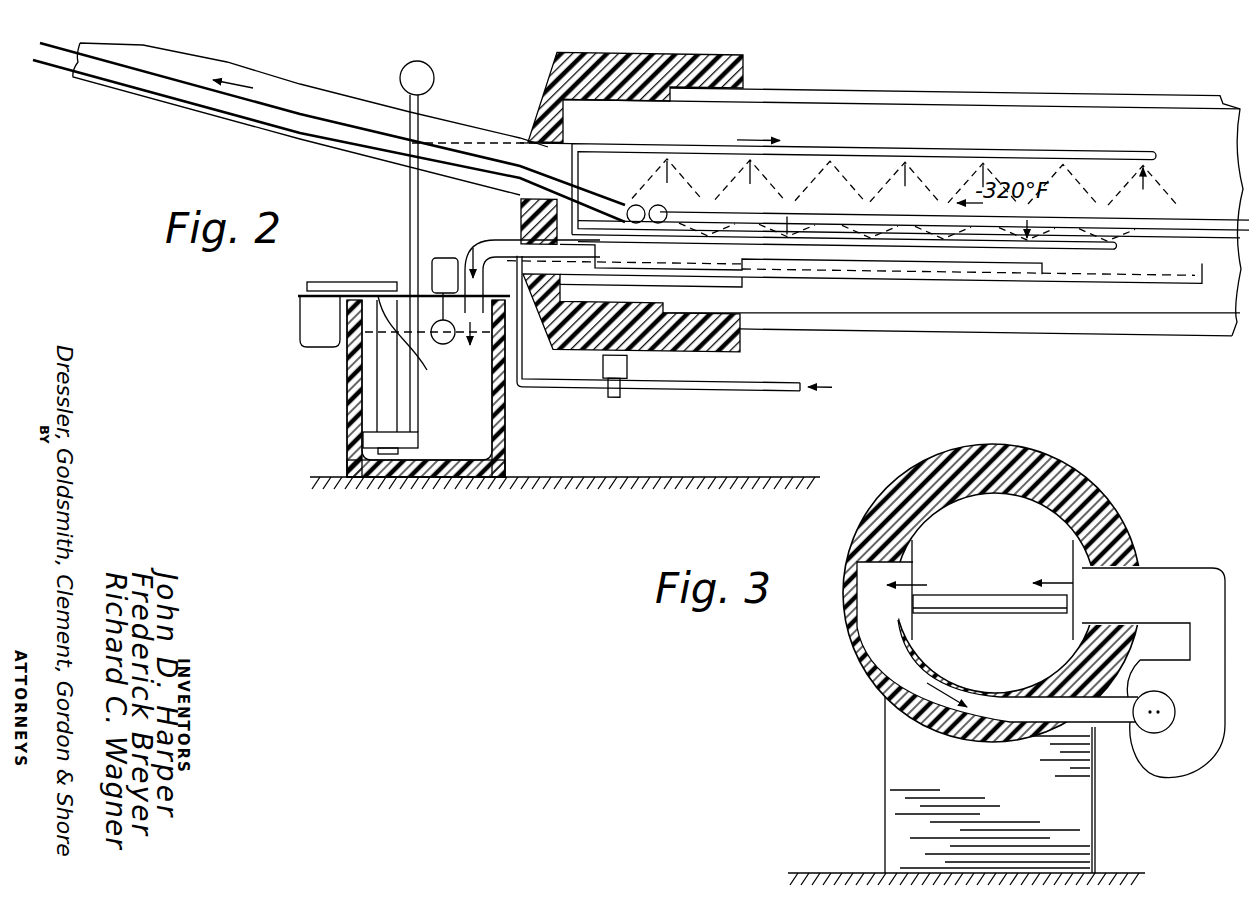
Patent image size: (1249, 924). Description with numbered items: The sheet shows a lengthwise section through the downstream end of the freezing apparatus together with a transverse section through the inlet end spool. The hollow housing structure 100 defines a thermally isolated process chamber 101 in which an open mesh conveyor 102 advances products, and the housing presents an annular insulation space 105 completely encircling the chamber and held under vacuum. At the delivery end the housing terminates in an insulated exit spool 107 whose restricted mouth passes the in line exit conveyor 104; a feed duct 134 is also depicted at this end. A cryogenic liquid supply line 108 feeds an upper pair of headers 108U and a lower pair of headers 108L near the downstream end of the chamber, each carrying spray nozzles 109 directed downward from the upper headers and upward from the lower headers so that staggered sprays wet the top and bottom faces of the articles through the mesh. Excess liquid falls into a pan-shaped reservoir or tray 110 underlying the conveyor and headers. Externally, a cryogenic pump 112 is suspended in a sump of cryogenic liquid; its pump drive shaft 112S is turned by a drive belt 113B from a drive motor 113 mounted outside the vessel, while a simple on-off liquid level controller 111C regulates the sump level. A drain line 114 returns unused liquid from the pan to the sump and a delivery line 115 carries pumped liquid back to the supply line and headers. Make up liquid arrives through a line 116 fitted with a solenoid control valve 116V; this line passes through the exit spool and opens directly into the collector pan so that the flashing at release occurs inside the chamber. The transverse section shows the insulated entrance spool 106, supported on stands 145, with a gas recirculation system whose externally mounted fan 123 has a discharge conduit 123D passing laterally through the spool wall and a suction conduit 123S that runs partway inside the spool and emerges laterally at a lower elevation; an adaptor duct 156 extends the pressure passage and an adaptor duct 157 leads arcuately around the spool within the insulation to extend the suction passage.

In FIG. 2, the hollow housing structure 100 is at (1003, 85).
In FIG. 2, the process chamber 101 is at (1067, 130).
In FIG. 3, the process chamber 101 is at (1005, 512).
In FIG. 2, the conveyor 102 is at (1163, 222).
In FIG. 3, the conveyor 102 is at (982, 593).
In FIG. 2, the exit conveyor 104 is at (328, 120).
In FIG. 2, the annular insulation space 105 is at (900, 97).
In FIG. 3, the entrance spool 106 is at (1088, 472).
In FIG. 2, the exit spool 107 is at (743, 62).
In FIG. 2, the cryogenic liquid supply line 108 is at (493, 140).
In FIG. 2, the upper pair of headers 108U is at (620, 142).
In FIG. 2, the lower pair of headers 108L is at (1068, 248).
In FIG. 2, the spray nozzles 109 is at (1105, 185).
In FIG. 2, the reservoir or tray 110 is at (923, 277).
In FIG. 2, the liquid level controller 111C is at (443, 268).
In FIG. 2, the cryogenic pump 112 is at (405, 452).
In FIG. 2, the pump drive shaft 112S is at (431, 347).
In FIG. 2, the drive motor 113 is at (321, 322).
In FIG. 2, the drive belt 113B is at (370, 270).
In FIG. 2, the drain line 114 is at (490, 256).
In FIG. 2, the delivery line 115 is at (418, 223).
In FIG. 2, the make up line 116 is at (735, 392).
In FIG. 2, the solenoid control valve 116V is at (627, 368).
In FIG. 3, the fan 123 is at (1180, 772).
In FIG. 3, the discharge conduit 123D is at (1160, 573).
In FIG. 3, the suction conduit 123S is at (1067, 728).
In FIG. 2, the feed duct 134 is at (227, 63).
In FIG. 3, the stands 145 is at (883, 742).
In FIG. 3, the adaptor duct 156 is at (1073, 618).
In FIG. 3, the adaptor duct 157 is at (910, 618).